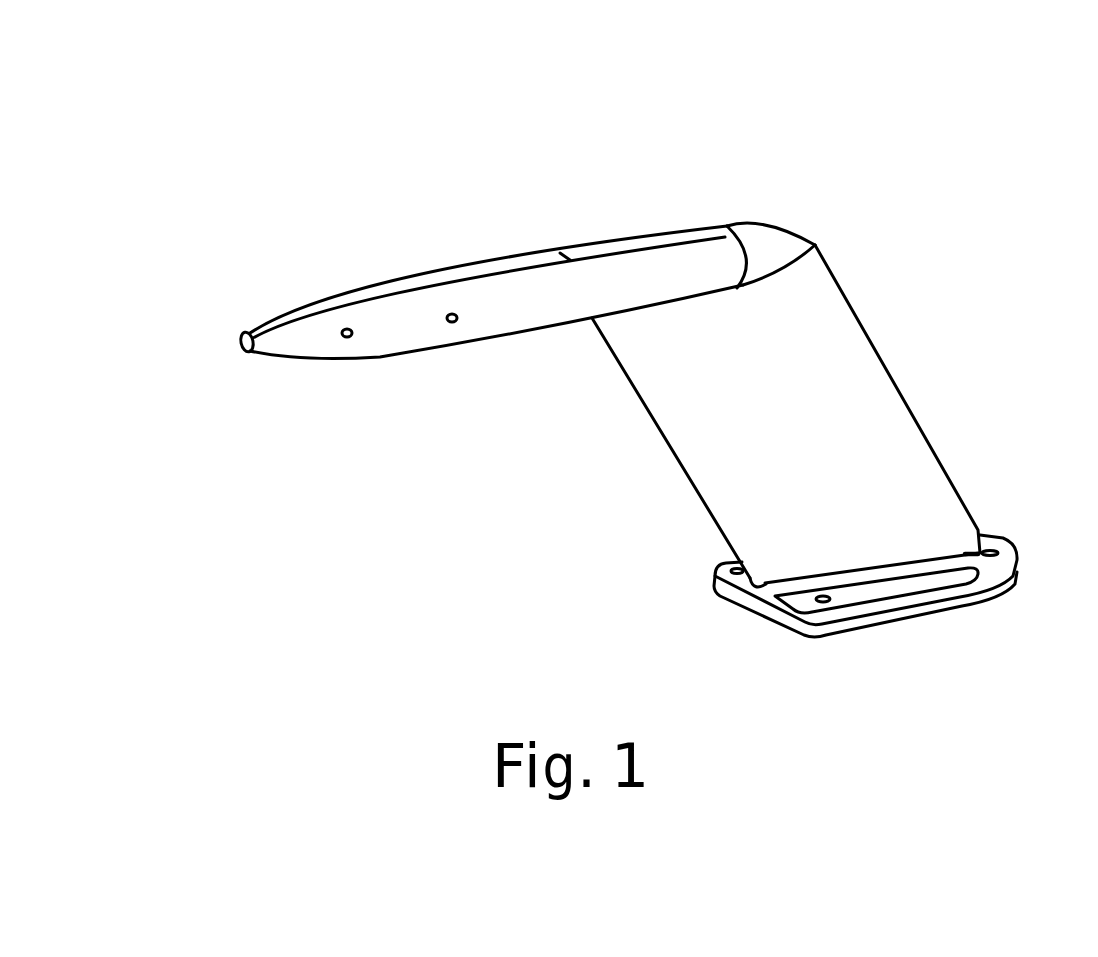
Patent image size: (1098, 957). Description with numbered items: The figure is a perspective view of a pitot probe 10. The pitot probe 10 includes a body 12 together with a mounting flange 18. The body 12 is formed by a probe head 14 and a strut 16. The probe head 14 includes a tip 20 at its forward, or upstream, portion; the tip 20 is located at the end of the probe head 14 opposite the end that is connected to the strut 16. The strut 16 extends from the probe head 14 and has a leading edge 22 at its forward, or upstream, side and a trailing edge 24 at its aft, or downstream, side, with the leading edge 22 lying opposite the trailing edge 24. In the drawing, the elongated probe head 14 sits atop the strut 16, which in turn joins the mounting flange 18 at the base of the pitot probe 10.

The pitot probe 10 is at (346, 115).
The body 12 is at (554, 421).
The probe head 14 is at (370, 340).
The strut 16 is at (885, 418).
The mounting flange 18 is at (927, 573).
The tip 20 is at (237, 343).
The leading edge 22 is at (692, 483).
The trailing edge 24 is at (855, 312).